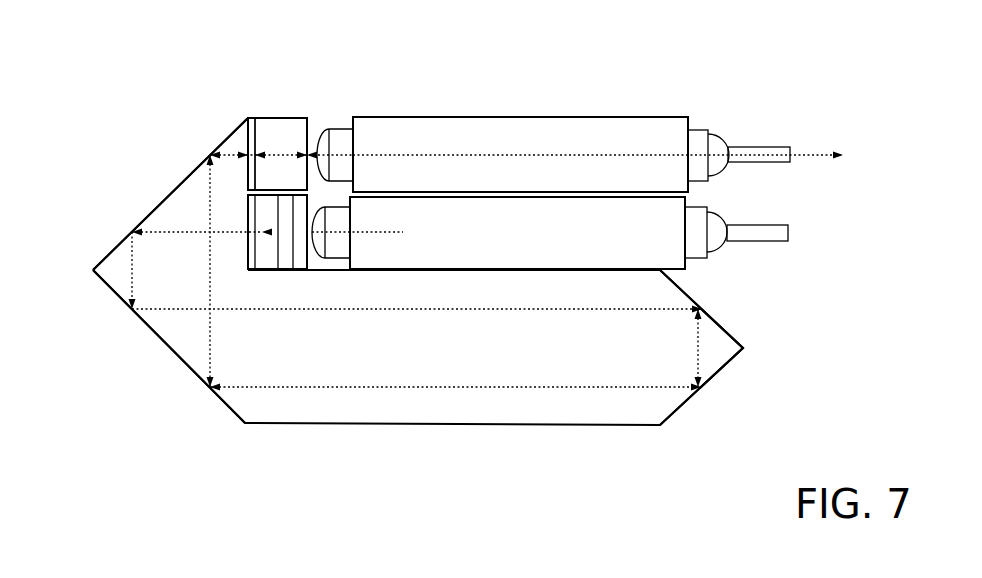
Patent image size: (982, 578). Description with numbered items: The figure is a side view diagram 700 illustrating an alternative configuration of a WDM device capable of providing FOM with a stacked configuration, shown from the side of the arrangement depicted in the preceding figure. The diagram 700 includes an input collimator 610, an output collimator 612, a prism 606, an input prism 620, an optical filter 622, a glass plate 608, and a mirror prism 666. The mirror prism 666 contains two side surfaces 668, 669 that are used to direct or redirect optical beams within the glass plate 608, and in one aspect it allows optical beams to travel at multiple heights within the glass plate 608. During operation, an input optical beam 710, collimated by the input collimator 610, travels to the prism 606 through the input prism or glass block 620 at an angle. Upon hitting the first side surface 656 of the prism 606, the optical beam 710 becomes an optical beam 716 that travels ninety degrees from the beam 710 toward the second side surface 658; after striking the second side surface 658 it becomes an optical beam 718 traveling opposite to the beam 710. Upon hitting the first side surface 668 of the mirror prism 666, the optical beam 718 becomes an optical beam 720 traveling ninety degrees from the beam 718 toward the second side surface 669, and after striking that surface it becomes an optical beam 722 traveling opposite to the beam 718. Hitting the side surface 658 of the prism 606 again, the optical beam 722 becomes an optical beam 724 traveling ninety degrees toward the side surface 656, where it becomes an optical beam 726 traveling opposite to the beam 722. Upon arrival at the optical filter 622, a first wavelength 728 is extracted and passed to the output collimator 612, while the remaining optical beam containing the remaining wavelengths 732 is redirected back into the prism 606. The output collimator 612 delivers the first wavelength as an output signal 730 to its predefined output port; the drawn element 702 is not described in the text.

The side view diagram 700 is at (178, 505).
The glass plate 608 is at (440, 363).
The prism 606 is at (154, 271).
The input collimator 610 is at (504, 246).
The output collimator 612 is at (513, 151).
The input prism 620 is at (253, 272).
The optical filter 622 is at (262, 122).
The first side surface 656 is at (148, 213).
The second side surface 658 is at (165, 343).
The mirror prism 666 is at (772, 350).
The first side surface 668 is at (715, 318).
The second side surface 669 is at (725, 365).
The lower nozzle rod 702 is at (746, 226).
The input optical beam 710 is at (360, 232).
The optical beam 716 is at (132, 274).
The optical beam 718 is at (490, 308).
The optical beam 720 is at (695, 327).
The optical beam 722 is at (327, 385).
The optical beam 724 is at (231, 271).
The optical beam 726 is at (228, 153).
The first wavelength λ1 728 is at (318, 128).
The output signal 730 is at (806, 153).
The remaining wavelengths 732 is at (268, 122).